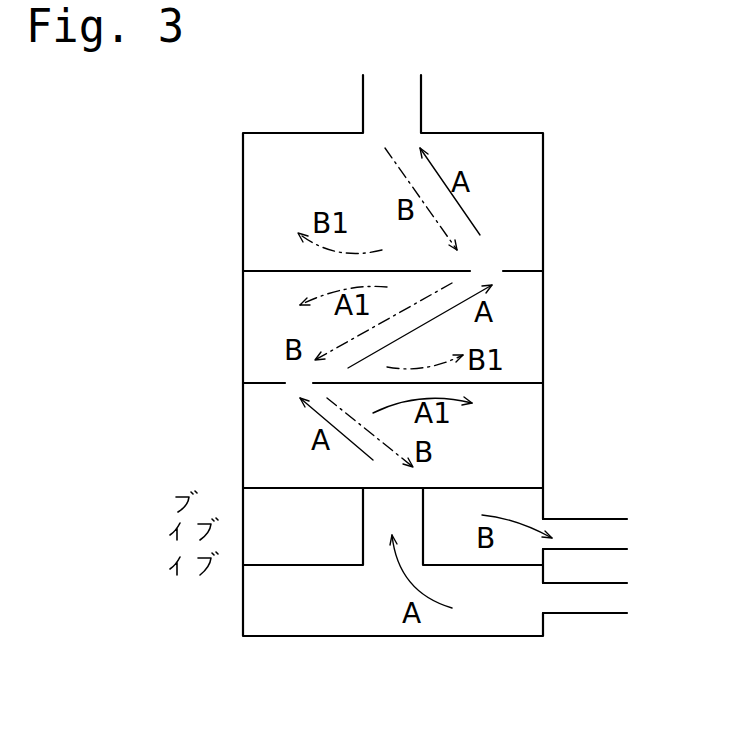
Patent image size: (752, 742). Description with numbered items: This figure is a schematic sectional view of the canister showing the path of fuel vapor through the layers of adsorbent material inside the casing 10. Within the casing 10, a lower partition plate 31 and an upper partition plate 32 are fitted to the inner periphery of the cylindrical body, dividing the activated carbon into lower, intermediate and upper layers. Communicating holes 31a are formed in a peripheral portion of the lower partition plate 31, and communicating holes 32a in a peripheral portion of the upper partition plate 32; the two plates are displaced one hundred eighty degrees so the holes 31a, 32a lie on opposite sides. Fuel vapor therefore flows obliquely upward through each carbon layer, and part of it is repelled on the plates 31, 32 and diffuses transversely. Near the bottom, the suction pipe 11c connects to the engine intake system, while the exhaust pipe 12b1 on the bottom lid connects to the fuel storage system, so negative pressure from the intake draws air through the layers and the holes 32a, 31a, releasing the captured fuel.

The casing 10 is at (560, 307).
The upper partition plate 32 is at (260, 270).
The communicating holes 32a is at (492, 270).
The lower partition plate 31 is at (522, 382).
The communicating holes 31a is at (292, 387).
The suction pipe 11c is at (593, 519).
The exhaust pipe 12b1 is at (597, 615).